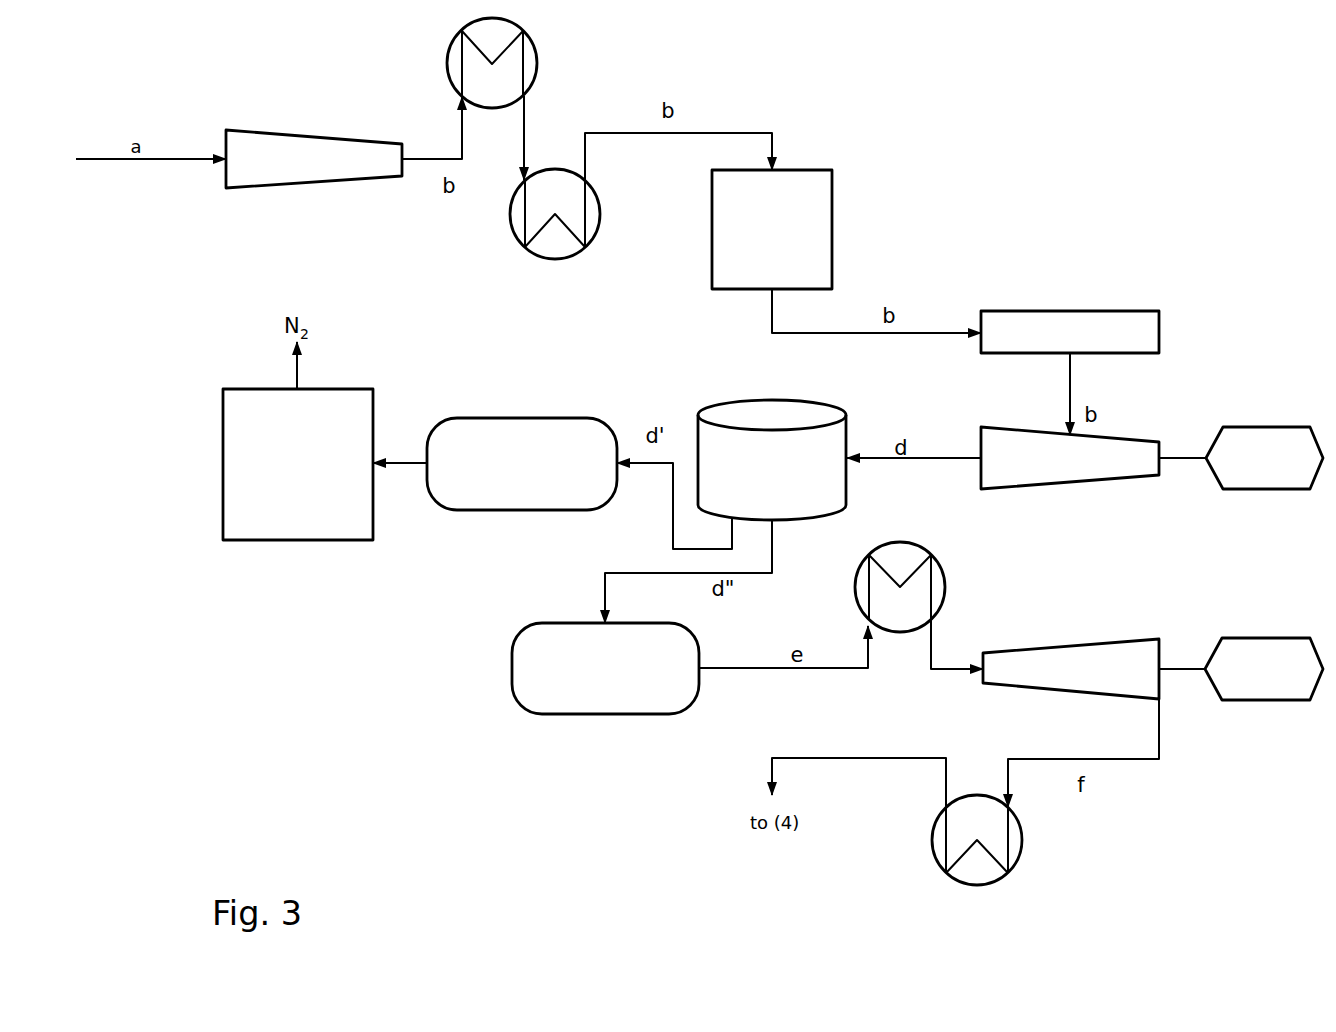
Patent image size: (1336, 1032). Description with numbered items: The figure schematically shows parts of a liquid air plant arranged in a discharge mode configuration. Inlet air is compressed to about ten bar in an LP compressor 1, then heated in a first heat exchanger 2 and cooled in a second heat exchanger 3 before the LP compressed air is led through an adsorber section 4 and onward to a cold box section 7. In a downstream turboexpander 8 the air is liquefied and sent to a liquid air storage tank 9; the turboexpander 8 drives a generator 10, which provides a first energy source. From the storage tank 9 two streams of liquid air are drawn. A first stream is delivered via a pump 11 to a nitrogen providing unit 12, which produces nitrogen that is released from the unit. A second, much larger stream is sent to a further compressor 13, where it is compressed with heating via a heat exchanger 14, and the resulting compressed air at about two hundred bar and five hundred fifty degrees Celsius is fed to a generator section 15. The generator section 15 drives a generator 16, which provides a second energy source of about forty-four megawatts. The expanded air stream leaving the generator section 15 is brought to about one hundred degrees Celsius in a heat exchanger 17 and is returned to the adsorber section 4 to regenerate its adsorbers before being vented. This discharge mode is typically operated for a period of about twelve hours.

The LP compressor 1 is at (314, 159).
The first heat exchanger 2 is at (492, 63).
The second heat exchanger 3 is at (555, 214).
The adsorber section 4 is at (772, 229).
The cold box section 7 is at (1070, 332).
The turboexpander 8 is at (1070, 458).
The liquid air storage tank 9 is at (772, 460).
The generator 10 is at (1264, 458).
The pump 11 is at (522, 464).
The nitrogen providing unit 12 is at (298, 464).
The further compressor 13 is at (605, 668).
The heat exchanger 14 is at (900, 587).
The generator section 15 is at (1071, 669).
The generator 16 is at (1264, 669).
The heat exchanger 17 is at (977, 840).